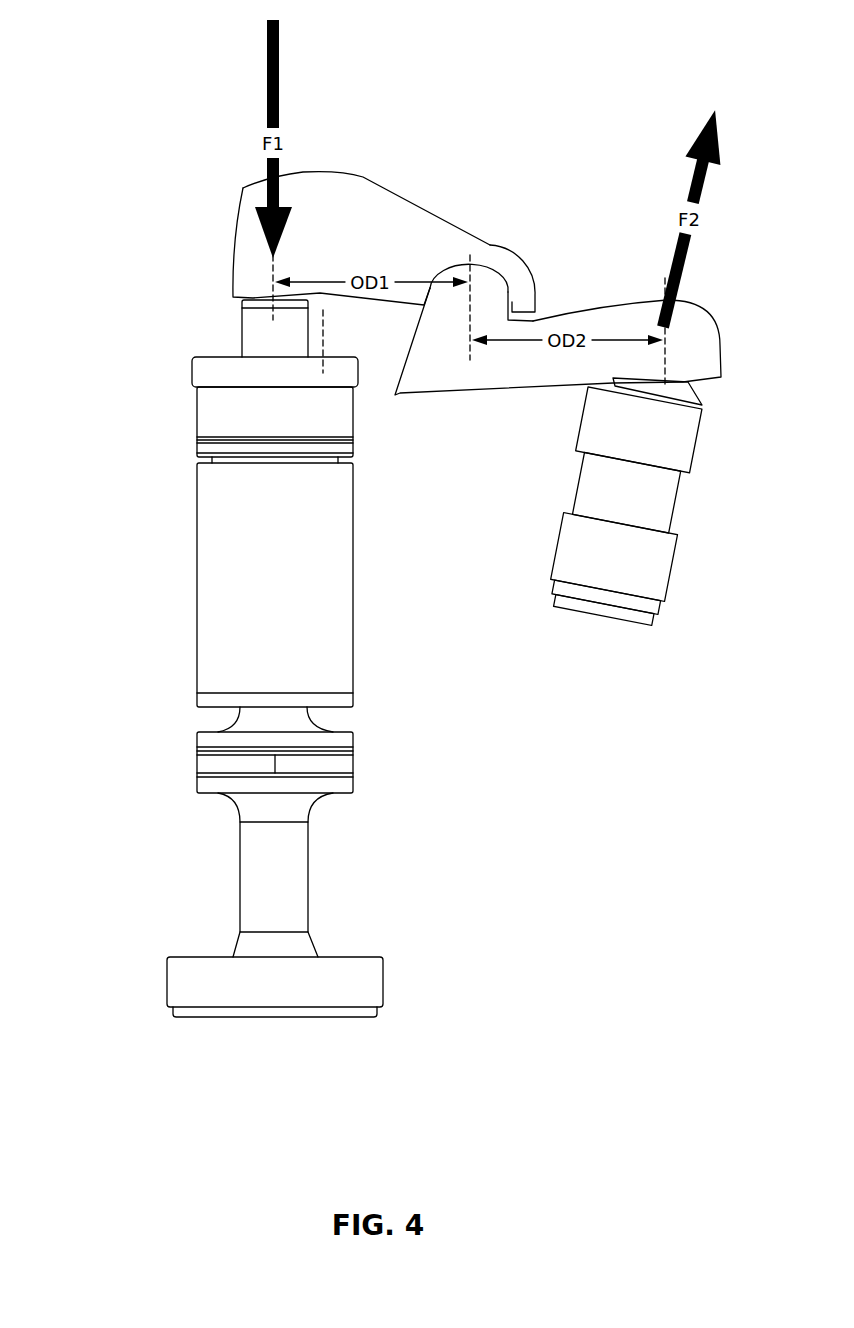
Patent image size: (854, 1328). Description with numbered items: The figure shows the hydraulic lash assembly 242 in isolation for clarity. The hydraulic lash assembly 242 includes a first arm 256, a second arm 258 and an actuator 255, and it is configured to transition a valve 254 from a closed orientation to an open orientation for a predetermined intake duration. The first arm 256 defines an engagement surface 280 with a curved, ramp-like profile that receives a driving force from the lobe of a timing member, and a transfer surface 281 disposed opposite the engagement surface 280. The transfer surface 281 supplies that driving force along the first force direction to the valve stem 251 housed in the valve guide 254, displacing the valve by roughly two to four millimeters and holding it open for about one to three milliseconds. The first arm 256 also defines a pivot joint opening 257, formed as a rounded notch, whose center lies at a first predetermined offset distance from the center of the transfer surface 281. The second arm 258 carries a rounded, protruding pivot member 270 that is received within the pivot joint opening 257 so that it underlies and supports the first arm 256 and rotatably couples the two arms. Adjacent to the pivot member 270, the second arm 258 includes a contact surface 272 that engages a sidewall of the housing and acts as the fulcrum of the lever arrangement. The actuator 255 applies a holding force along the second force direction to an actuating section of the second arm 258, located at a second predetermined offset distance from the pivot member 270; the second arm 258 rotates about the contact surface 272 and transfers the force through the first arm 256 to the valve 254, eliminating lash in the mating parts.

The hydraulic lash assembly 242 is at (199, 159).
The valve stem 251 is at (227, 323).
The valve 254 is at (175, 399).
The actuator 255 is at (682, 513).
The first arm 256 is at (302, 185).
The pivot joint opening 257 is at (429, 265).
The second arm 258 is at (582, 317).
The pivot member 270 is at (497, 259).
The contact surface 272 is at (414, 410).
The engagement surface 280 is at (421, 178).
The transfer surface 281 is at (294, 312).